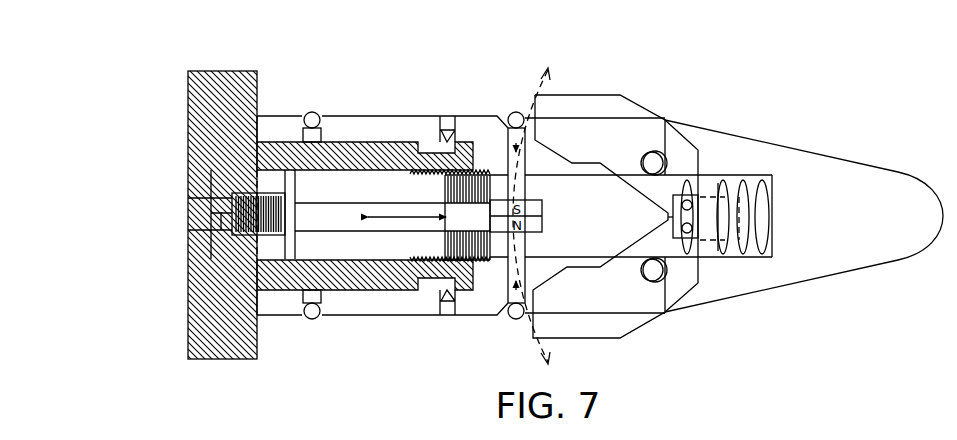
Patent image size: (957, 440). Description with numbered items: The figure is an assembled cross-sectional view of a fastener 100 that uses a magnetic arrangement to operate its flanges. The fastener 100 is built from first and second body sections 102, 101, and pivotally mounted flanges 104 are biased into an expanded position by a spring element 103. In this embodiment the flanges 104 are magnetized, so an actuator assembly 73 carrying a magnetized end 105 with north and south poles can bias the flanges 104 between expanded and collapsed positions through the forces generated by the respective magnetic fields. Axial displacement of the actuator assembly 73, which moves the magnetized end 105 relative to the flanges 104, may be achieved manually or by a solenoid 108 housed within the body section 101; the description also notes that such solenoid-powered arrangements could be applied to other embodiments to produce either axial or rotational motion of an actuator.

The fastener 100 is at (387, 100).
The second body section 101 is at (222, 80).
The first body section 102 is at (846, 172).
The spring element 103 is at (762, 183).
The flanges 104 is at (638, 104).
The magnetized end 105 is at (506, 190).
The solenoid 108 is at (225, 248).
The actuator assembly 73 is at (360, 237).